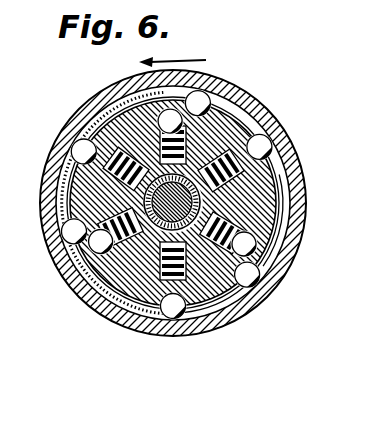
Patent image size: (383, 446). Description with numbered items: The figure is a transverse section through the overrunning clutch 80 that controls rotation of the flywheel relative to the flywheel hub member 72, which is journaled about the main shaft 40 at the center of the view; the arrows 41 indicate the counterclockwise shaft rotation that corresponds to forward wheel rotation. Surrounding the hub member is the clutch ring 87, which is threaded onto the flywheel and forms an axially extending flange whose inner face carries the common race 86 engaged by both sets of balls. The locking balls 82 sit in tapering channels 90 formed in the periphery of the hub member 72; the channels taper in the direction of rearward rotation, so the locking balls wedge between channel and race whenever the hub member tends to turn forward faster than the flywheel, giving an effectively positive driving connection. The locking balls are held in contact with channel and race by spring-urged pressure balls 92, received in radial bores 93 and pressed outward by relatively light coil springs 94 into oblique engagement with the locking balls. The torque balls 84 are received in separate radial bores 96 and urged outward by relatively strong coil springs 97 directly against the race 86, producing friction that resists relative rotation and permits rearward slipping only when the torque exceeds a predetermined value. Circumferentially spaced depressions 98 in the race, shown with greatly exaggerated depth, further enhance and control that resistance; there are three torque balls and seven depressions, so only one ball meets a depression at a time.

The main shaft 40 is at (116, 328).
The arrows 41 is at (206, 60).
The flywheel hub member 72 is at (286, 132).
The overrunning clutch 80 is at (265, 125).
The locking balls 82 is at (213, 97).
The torque balls 84 is at (269, 150).
The race 86 is at (246, 94).
The clutch ring 87 is at (270, 114).
The tapering channels 90 is at (58, 225).
The pressure balls 92 is at (143, 88).
The radial bores 93 is at (257, 229).
The coil springs 94 is at (238, 294).
The radial bores 96 is at (292, 178).
The coil springs 97 is at (298, 191).
The depressions 98 is at (276, 224).